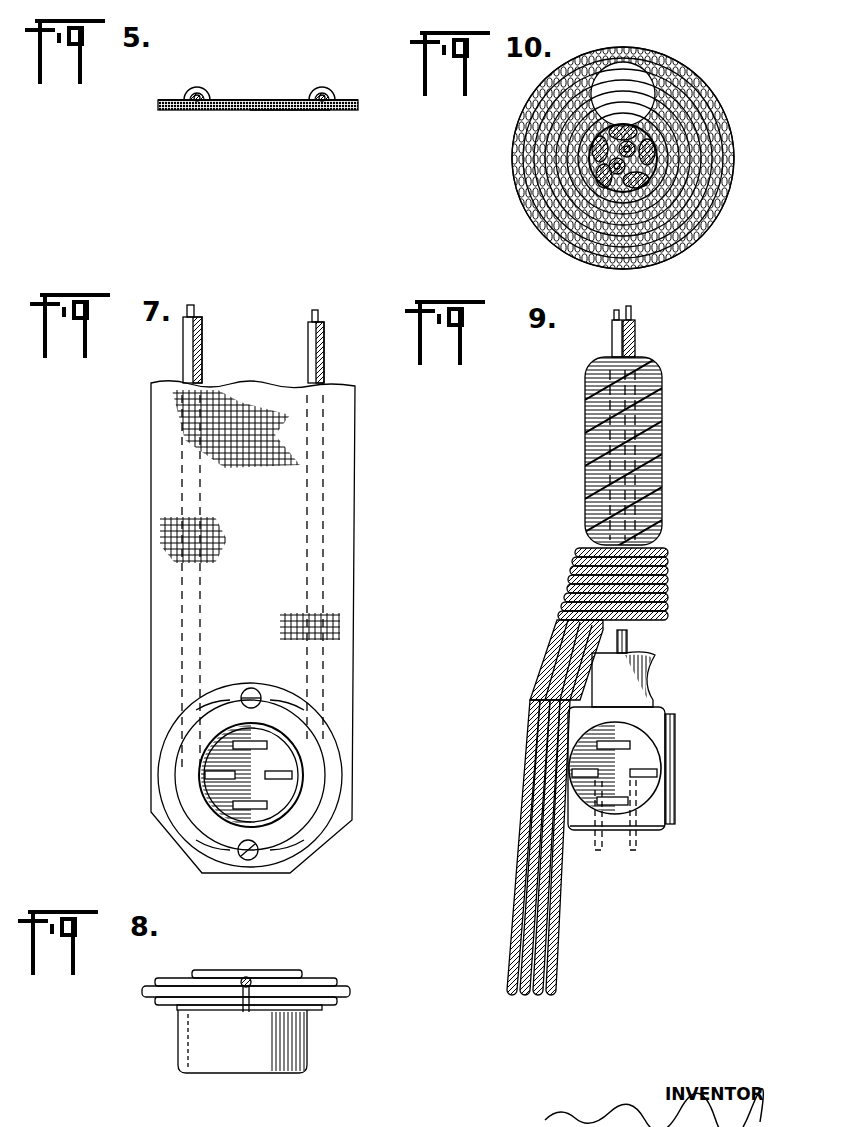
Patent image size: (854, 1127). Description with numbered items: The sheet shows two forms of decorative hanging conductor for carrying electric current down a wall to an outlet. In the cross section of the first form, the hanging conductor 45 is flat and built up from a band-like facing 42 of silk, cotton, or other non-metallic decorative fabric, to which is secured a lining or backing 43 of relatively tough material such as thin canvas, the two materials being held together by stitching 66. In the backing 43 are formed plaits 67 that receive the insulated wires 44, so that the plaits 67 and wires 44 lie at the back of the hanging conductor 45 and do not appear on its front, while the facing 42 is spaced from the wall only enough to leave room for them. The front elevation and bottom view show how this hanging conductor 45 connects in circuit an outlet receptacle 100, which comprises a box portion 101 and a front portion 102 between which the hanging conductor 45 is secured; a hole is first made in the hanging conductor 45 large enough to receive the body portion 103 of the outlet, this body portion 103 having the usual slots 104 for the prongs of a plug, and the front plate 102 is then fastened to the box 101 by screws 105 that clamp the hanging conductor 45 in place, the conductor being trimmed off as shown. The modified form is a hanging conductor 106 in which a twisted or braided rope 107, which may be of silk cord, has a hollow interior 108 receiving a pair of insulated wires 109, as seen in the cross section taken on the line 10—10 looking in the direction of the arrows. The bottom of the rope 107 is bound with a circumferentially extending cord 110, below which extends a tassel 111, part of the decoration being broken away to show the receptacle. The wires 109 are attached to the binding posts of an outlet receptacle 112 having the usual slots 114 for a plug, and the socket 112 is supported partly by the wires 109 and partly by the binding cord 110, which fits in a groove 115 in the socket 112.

In FIG. 5, the facing 42 is at (322, 111).
In FIG. 7, the facing 42 is at (280, 388).
In FIG. 5, the lining or backing 43 is at (285, 99).
In FIG. 5, the insulated wires 44 is at (205, 90).
In FIG. 7, the insulated wires 44 is at (200, 376).
In FIG. 5, the hanging conductor 45 is at (266, 120).
In FIG. 7, the hanging conductor 45 is at (140, 518).
In FIG. 8, the hanging conductor 45 is at (358, 1006).
In FIG. 5, the stitching 66 is at (178, 112).
In FIG. 5, the plaits 67 is at (195, 88).
In FIG. 8, the outlet receptacle 100 is at (167, 1057).
In FIG. 8, the box portion 101 is at (283, 1043).
In FIG. 7, the front portion 102 is at (195, 768).
In FIG. 8, the front portion 102 is at (313, 982).
In FIG. 7, the body portion 103 is at (277, 789).
In FIG. 8, the body portion 103 is at (270, 968).
In FIG. 7, the slots 104 is at (281, 768).
In FIG. 7, the screws 105 is at (256, 688).
In FIG. 8, the screws 105 is at (245, 975).
In FIG. 10, the modified hanging conductor 106 is at (499, 145).
In FIG. 9, the modified hanging conductor 106 is at (574, 417).
In FIG. 10, the twisted or braided rope 107 is at (628, 128).
In FIG. 9, the twisted or braided rope 107 is at (653, 418).
In FIG. 10, the hollow interior 108 is at (590, 96).
In FIG. 10, the insulated wires 109 is at (645, 158).
In FIG. 9, the insulated wires 109 is at (613, 340).
In FIG. 9, the circumferentially extending cord 110 is at (570, 605).
In FIG. 9, the tassel 111 is at (520, 911).
In FIG. 9, the outlet receptacle 112 is at (660, 718).
In FIG. 9, the slots 114 is at (643, 766).
In FIG. 9, the groove 115 is at (645, 681).
In FIG. 9, the section line 10— 10 is at (558, 440).